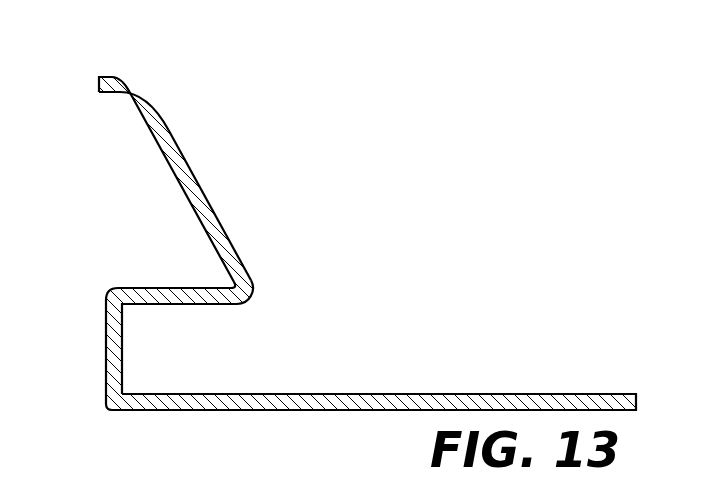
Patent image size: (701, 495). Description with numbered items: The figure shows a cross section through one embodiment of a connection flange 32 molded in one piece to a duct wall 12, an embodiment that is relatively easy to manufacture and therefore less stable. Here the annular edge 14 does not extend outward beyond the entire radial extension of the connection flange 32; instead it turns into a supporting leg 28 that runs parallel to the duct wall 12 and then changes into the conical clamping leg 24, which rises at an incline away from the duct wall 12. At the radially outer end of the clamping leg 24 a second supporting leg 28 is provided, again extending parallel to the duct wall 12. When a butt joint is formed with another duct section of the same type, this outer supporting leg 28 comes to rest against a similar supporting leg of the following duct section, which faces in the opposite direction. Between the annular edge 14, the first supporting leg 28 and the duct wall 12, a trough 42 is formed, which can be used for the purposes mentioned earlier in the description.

The duct wall 12 is at (423, 400).
The annular edge 14 is at (112, 360).
The clamping leg 24 is at (235, 248).
The supporting leg 28 is at (113, 80).
The connection flange 32 is at (192, 158).
The trough 42 is at (138, 362).